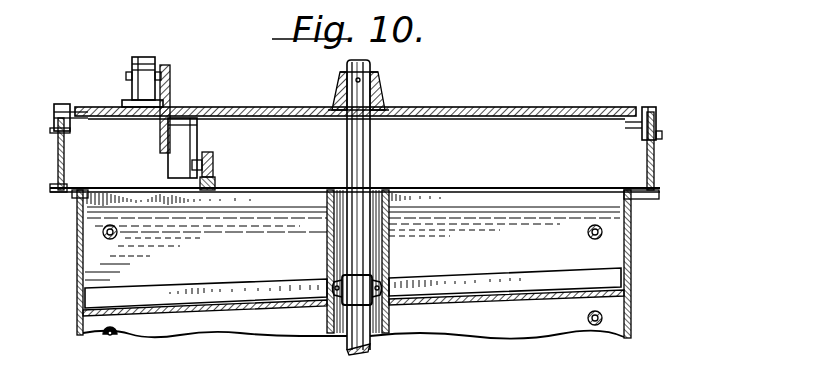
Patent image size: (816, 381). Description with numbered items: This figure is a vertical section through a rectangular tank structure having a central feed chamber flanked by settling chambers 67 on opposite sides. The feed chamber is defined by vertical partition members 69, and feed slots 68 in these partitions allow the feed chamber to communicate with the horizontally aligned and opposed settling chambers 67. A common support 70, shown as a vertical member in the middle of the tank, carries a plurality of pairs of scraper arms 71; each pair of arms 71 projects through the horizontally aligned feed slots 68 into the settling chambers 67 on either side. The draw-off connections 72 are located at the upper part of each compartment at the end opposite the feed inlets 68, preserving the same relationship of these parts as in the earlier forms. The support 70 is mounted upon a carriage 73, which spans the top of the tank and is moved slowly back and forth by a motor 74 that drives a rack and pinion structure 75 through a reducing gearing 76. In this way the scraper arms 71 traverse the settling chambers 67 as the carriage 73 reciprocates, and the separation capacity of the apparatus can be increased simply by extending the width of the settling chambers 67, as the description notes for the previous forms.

The settling chambers 67 is at (240, 255).
The feed slots 68 is at (334, 263).
The vertical partition members 69 is at (328, 246).
The common support 70 is at (362, 165).
The scraper arms 71 is at (200, 291).
The draw-off connections 72 is at (102, 232).
The carriage 73 is at (501, 108).
The motor 74 is at (142, 62).
The rack and pinion structure 75 is at (214, 161).
The reducing gearing 76 is at (176, 176).